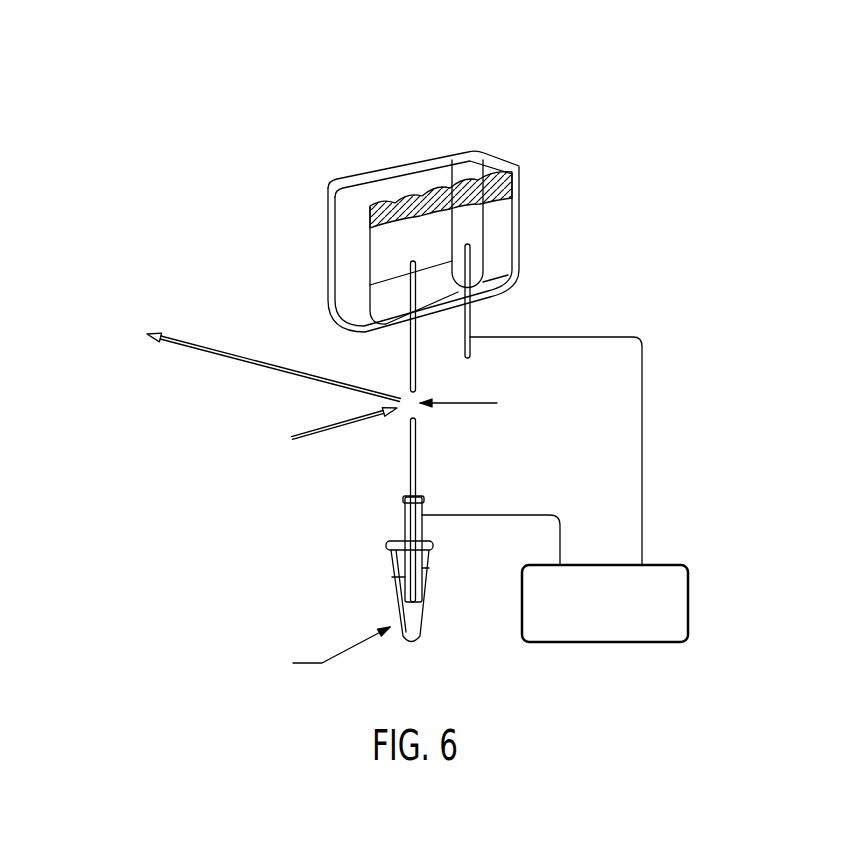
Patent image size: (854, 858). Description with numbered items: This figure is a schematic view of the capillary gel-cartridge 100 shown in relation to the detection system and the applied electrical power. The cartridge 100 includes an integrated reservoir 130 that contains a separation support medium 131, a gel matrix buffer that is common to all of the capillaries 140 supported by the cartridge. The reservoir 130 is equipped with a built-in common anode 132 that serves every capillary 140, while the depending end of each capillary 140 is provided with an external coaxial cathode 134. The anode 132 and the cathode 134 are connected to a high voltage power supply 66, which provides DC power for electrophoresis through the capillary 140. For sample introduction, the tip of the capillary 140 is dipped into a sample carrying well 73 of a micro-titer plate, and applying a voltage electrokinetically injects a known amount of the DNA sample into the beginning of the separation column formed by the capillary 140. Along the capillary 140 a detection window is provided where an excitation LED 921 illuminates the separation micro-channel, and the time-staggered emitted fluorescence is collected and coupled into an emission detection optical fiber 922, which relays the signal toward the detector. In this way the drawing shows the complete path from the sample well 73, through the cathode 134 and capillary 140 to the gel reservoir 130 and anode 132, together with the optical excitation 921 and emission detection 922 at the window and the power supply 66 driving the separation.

The gel-cartridge 100 is at (522, 140).
The integrated reservoir 130 is at (360, 175).
The separation support medium 131 is at (468, 236).
The anode 132 is at (478, 274).
The cathode 134 is at (398, 518).
The capillary 140 is at (425, 461).
The power supply 66 is at (690, 603).
The sample carrying well 73 is at (428, 583).
The excitation LED 921 is at (308, 447).
The emission detection optical fiber 922 is at (236, 367).